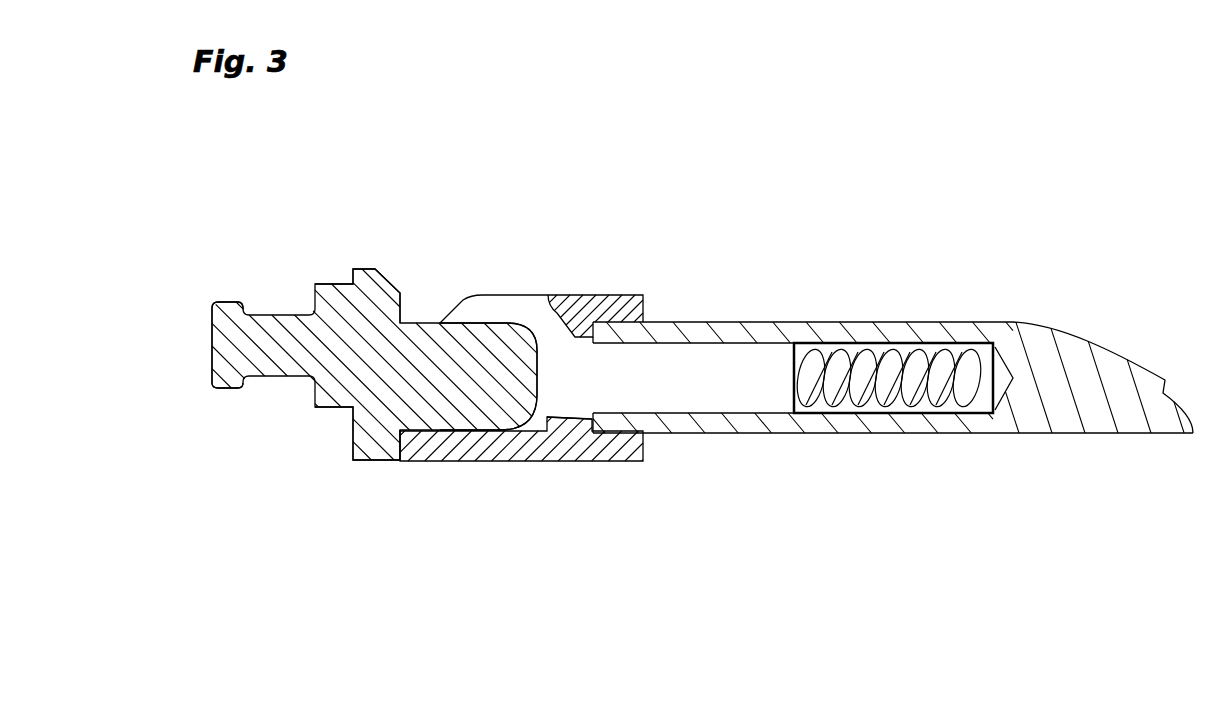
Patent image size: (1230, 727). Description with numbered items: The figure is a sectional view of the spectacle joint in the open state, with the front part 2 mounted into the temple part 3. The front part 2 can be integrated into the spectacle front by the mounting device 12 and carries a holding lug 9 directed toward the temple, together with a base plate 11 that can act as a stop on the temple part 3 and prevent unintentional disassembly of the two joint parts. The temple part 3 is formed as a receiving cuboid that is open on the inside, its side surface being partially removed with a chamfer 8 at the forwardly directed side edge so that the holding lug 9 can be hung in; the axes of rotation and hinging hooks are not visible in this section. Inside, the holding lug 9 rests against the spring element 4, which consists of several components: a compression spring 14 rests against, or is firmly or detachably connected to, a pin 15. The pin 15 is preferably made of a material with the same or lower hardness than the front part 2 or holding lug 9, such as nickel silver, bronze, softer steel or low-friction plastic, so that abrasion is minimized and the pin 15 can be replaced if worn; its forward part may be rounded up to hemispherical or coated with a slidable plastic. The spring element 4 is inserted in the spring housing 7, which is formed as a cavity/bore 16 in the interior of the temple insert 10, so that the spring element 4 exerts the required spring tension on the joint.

The front part 2 is at (272, 328).
The temple part 3 is at (555, 443).
The spring element 4 is at (705, 373).
The spring housing 7 is at (958, 343).
The chamfer 8 is at (563, 313).
The holding lug 9 is at (497, 352).
The temple insert 10 is at (1158, 407).
The base plate 11 is at (375, 292).
The mounting device 12 is at (224, 358).
The compression spring 14 is at (895, 390).
The pin 15 is at (589, 377).
The cavity/bore 16 is at (1005, 383).